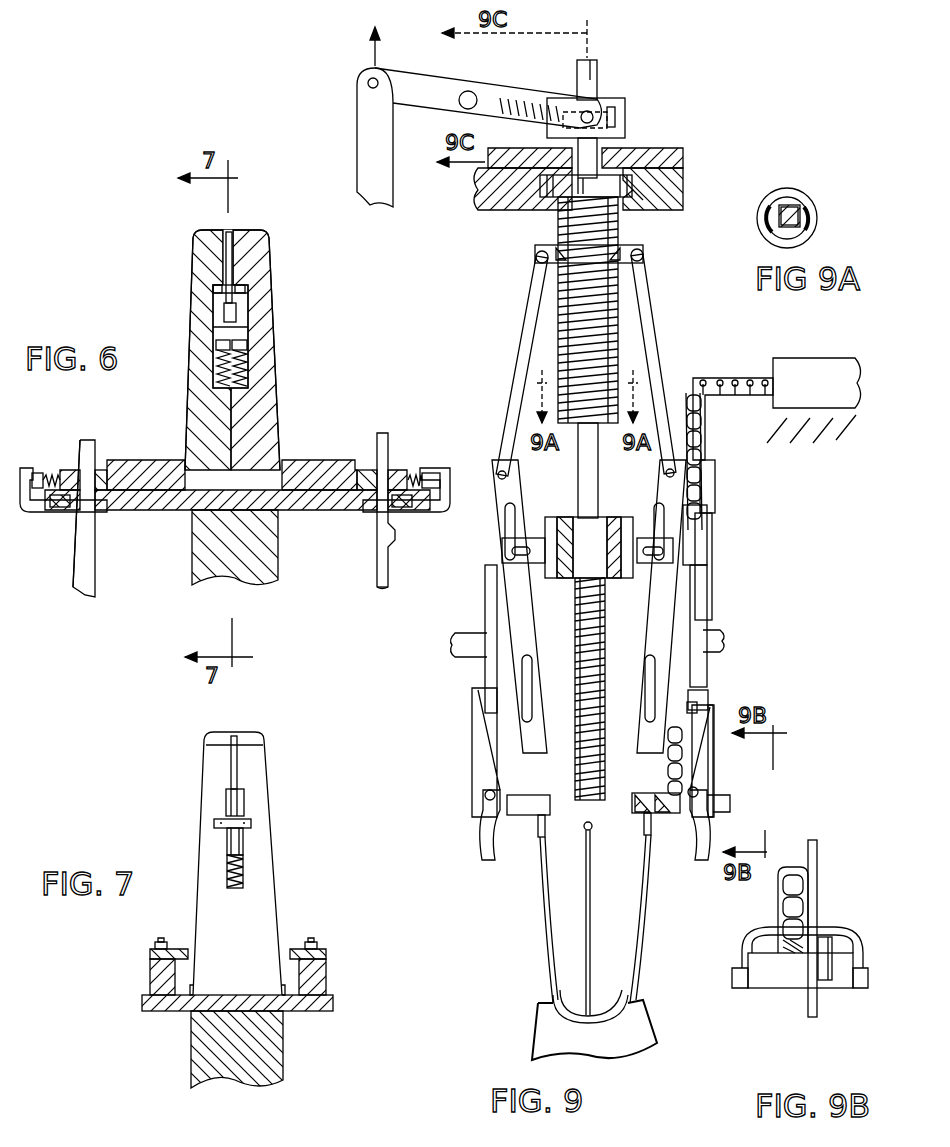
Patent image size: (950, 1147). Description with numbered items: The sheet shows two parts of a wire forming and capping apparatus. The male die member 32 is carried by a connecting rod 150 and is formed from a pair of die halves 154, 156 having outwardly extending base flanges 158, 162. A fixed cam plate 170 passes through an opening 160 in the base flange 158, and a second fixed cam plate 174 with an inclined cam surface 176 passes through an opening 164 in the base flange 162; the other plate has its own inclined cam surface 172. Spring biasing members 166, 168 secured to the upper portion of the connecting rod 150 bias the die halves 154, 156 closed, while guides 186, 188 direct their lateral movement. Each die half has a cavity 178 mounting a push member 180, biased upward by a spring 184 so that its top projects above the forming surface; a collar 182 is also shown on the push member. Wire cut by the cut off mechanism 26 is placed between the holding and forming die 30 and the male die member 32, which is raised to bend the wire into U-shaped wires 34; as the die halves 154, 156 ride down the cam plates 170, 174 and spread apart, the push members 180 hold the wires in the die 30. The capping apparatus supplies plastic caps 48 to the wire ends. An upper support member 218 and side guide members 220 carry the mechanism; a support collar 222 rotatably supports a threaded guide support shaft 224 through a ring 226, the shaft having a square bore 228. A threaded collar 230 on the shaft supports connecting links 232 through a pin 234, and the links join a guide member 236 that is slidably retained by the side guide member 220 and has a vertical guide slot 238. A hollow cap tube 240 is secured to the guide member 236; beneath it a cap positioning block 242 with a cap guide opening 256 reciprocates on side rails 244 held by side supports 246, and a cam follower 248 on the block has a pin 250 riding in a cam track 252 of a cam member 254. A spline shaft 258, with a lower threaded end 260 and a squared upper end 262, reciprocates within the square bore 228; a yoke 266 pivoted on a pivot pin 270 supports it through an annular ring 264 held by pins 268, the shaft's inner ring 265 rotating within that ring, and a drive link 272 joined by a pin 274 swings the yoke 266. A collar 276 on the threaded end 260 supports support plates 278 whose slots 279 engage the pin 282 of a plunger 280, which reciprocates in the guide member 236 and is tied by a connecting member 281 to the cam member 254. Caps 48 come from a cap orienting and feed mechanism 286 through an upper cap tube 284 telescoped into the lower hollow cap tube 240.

In FIG. 7, the cut off mechanism 26 is at (165, 777).
In FIG. 9, the holding and forming die 30 is at (617, 1037).
In FIG. 6, the male die member 32 is at (155, 238).
In FIG. 9, the U-shaped wires 34 is at (542, 898).
In FIG. 9, the plastic caps 48 is at (722, 395).
In FIG. 9B, the plastic caps 48 is at (792, 925).
In FIG. 6, the connecting rod 150 is at (263, 548).
In FIG. 7, the connecting rod 150 is at (255, 1032).
In FIG. 6, the die half 154 is at (202, 345).
In FIG. 6, the die half 156 is at (260, 317).
In FIG. 7, the die half 156 is at (243, 904).
In FIG. 6, the base flange 158 is at (162, 483).
In FIG. 6, the opening 160 is at (97, 477).
In FIG. 6, the base flange 162 is at (317, 483).
In FIG. 6, the opening 164 is at (372, 465).
In FIG. 6, the spring biasing member 166 is at (28, 470).
In FIG. 6, the spring biasing member 168 is at (440, 463).
In FIG. 6, the fixed cam plate 170 is at (85, 563).
In FIG. 6, the inclined cam surface 172 is at (80, 532).
In FIG. 6, the fixed cam plate 174 is at (380, 547).
In FIG. 6, the inclined cam surface 176 is at (393, 527).
In FIG. 6, the cavity 178 is at (220, 307).
In FIG. 7, the cavity 178 is at (234, 803).
In FIG. 6, the push member 180 is at (222, 300).
In FIG. 7, the push member 180 is at (234, 777).
In FIG. 6, the collar 182 is at (227, 315).
In FIG. 7, the collar 182 is at (251, 824).
In FIG. 6, the spring 184 is at (220, 378).
In FIG. 7, the spring 184 is at (243, 874).
In FIG. 7, the guide 186 is at (326, 980).
In FIG. 7, the guide 188 is at (150, 980).
In FIG. 9, the upper support member 218 is at (663, 195).
In FIG. 9, the side guide member 220 is at (495, 588).
In FIG. 9, the support collar 222 is at (681, 166).
In FIG. 9, the threaded guide support shaft 224 is at (587, 273).
In FIG. 9A, the threaded guide support shaft 224 is at (805, 222).
In FIG. 9, the ring 226 is at (597, 188).
In FIG. 9A, the square bore 228 is at (790, 240).
In FIG. 9, the threaded collar 230 is at (645, 250).
In FIG. 9, the connecting link 232 is at (523, 343).
In FIG. 9, the pin 234 is at (540, 257).
In FIG. 9, the guide member 236 is at (508, 505).
In FIG. 9, the vertical guide slot 238 is at (678, 460).
In FIG. 9, the hollow cap tube 240 is at (697, 705).
In FIG. 9, the cap positioning block 242 is at (660, 820).
In FIG. 9B, the cap positioning block 242 is at (788, 972).
In FIG. 9, the side rails 244 is at (712, 802).
In FIG. 9B, the side rails 244 is at (742, 978).
In FIG. 9B, the side supports 246 is at (743, 962).
In FIG. 9B, the cam follower 248 is at (828, 973).
In FIG. 9, the pin 250 is at (700, 790).
In FIG. 9B, the pin 250 is at (822, 940).
In FIG. 9, the cam track 252 is at (700, 832).
In FIG. 9, the cam member 254 is at (712, 758).
In FIG. 9B, the cam member 254 is at (812, 890).
In FIG. 9, the cap guide opening 256 is at (633, 800).
In FIG. 9, the spline shaft 258 is at (688, 503).
In FIG. 9A, the spline shaft 258 is at (800, 215).
In FIG. 9, the lower threaded end 260 is at (603, 630).
In FIG. 9, the squared upper end 262 is at (590, 72).
In FIG. 7, the annular ring 264 is at (280, 1139).
In FIG. 9, the annular ring 264 is at (618, 132).
In FIG. 7, the inner ring 265 is at (159, 1139).
In FIG. 9, the yoke 266 is at (417, 80).
In FIG. 9, the pins 268 is at (593, 115).
In FIG. 9, the pivot pin 270 is at (477, 97).
In FIG. 9, the drive link 272 is at (377, 133).
In FIG. 9, the pin 274 is at (366, 80).
In FIG. 9, the collar 276 is at (695, 520).
In FIG. 9, the support plate 278 is at (565, 525).
In FIG. 9, the slot 279 is at (600, 612).
In FIG. 9, the plunger 280 is at (680, 775).
In FIG. 9, the connecting member 281 is at (693, 698).
In FIG. 9, the pin 282 is at (700, 558).
In FIG. 9, the upper cap tube 284 is at (697, 470).
In FIG. 9, the cap orienting and feed mechanism 286 is at (832, 377).